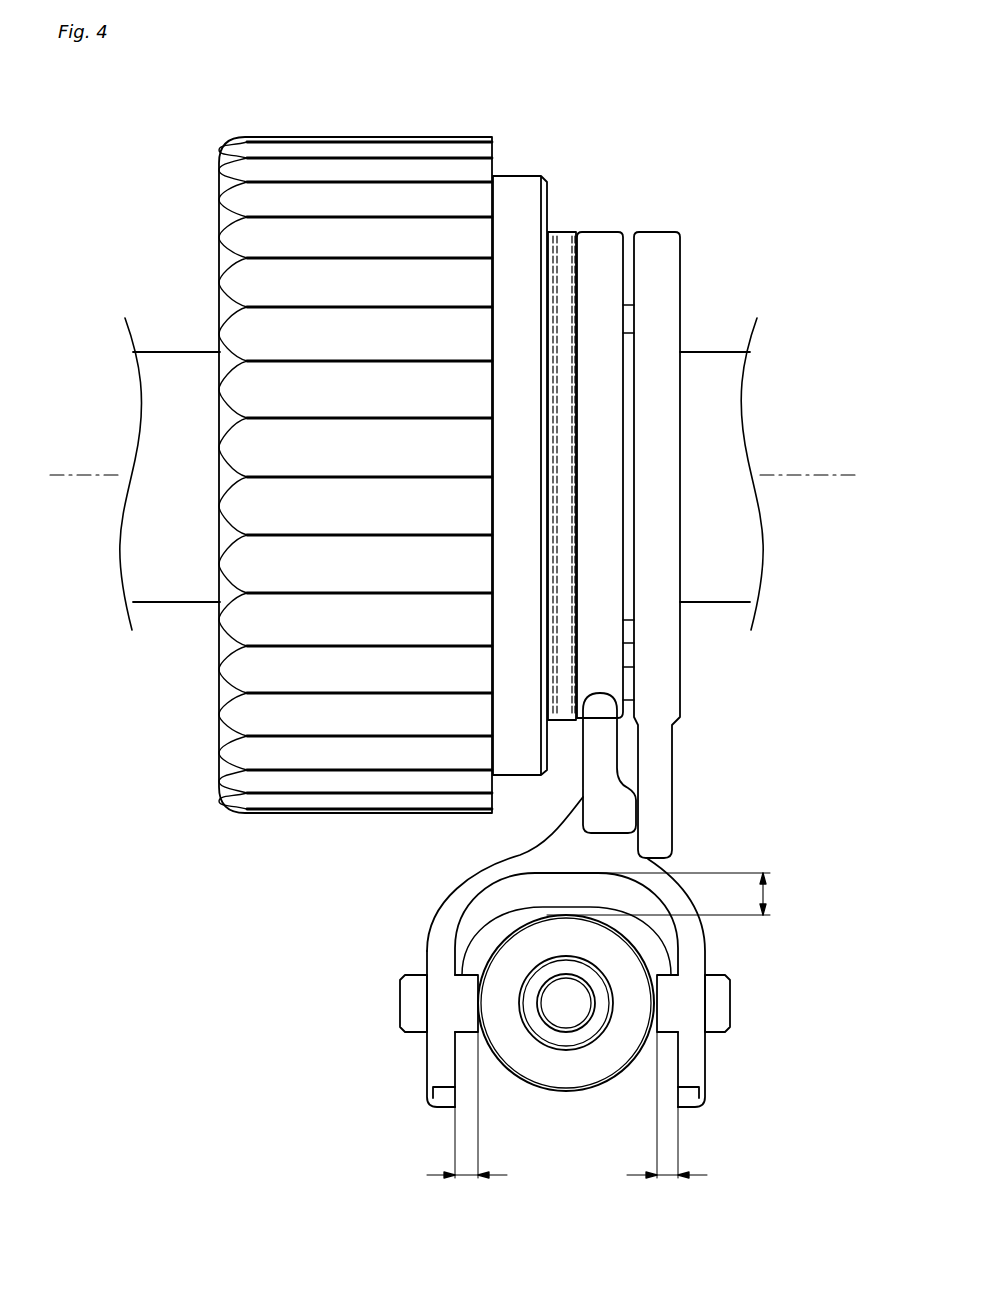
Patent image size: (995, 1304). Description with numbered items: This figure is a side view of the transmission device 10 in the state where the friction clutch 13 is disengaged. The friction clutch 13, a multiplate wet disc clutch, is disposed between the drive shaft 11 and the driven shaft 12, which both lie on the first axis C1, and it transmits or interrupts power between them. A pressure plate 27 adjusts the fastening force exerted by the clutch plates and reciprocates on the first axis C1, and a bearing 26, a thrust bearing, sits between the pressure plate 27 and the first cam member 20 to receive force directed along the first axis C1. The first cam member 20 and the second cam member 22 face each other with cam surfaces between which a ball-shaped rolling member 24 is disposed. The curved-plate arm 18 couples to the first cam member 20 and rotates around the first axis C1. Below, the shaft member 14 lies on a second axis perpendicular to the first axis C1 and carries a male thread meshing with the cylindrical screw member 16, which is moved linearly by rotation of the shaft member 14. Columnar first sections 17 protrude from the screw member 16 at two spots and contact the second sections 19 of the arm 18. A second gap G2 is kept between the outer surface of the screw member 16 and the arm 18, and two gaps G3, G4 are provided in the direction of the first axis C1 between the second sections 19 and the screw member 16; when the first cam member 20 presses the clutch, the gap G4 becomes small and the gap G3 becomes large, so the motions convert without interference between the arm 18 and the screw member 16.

The transmission device 10 is at (800, 93).
The drive shaft 11 is at (178, 375).
The driven shaft 12 is at (722, 365).
The friction clutch 13 is at (263, 160).
The shaft member 14 is at (567, 1010).
The screw member 16 is at (507, 965).
The first sections 17 is at (403, 1003).
The arm 18 is at (462, 902).
The second sections 19 is at (432, 1092).
The first cam member 20 is at (600, 247).
The second cam member 22 is at (655, 247).
The rolling member 24 is at (630, 660).
The bearing 26 is at (562, 240).
The pressure plate 27 is at (517, 185).
The first axis C1 is at (80, 473).
The second gap G2 is at (770, 893).
The gap G3 is at (466, 1177).
The gap G4 is at (668, 1177).